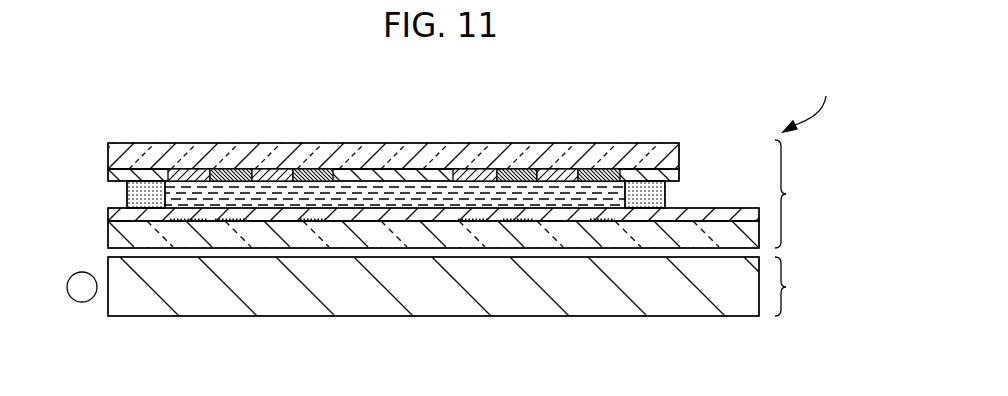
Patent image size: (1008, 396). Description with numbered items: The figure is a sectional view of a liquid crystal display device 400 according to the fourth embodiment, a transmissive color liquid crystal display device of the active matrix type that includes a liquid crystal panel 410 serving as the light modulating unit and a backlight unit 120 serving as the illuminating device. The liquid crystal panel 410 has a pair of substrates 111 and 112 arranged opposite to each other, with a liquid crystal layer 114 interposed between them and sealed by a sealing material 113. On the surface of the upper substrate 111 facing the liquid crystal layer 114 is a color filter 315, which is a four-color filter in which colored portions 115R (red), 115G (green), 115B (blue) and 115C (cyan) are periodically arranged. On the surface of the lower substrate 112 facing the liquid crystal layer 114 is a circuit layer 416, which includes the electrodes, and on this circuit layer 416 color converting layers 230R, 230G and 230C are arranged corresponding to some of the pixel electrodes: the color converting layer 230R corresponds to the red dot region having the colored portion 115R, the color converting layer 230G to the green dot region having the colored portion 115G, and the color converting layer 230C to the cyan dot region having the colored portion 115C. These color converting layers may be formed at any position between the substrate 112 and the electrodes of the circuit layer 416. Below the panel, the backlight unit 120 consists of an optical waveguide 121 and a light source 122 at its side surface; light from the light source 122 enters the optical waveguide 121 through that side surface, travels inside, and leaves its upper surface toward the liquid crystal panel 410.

The substrate 111 is at (111, 158).
The substrate 112 is at (113, 235).
The sealing material 113 is at (127, 192).
The liquid crystal layer 114 is at (401, 183).
The colored portion (red) 115R is at (196, 168).
The colored portion (green) 115G is at (222, 168).
The colored portion (blue) 115B is at (272, 168).
The colored portion (cyan) 115C is at (322, 168).
The color filter 315 is at (667, 175).
The circuit layer 416 is at (727, 219).
The color converting layer 230R is at (186, 222).
The color converting layer 230G is at (234, 222).
The color converting layer 230C is at (310, 222).
The backlight unit 120 is at (802, 286).
The optical waveguide 121 is at (143, 302).
The light source 122 is at (82, 302).
The liquid crystal panel 410 is at (802, 194).
The liquid crystal display device 400 is at (843, 92).